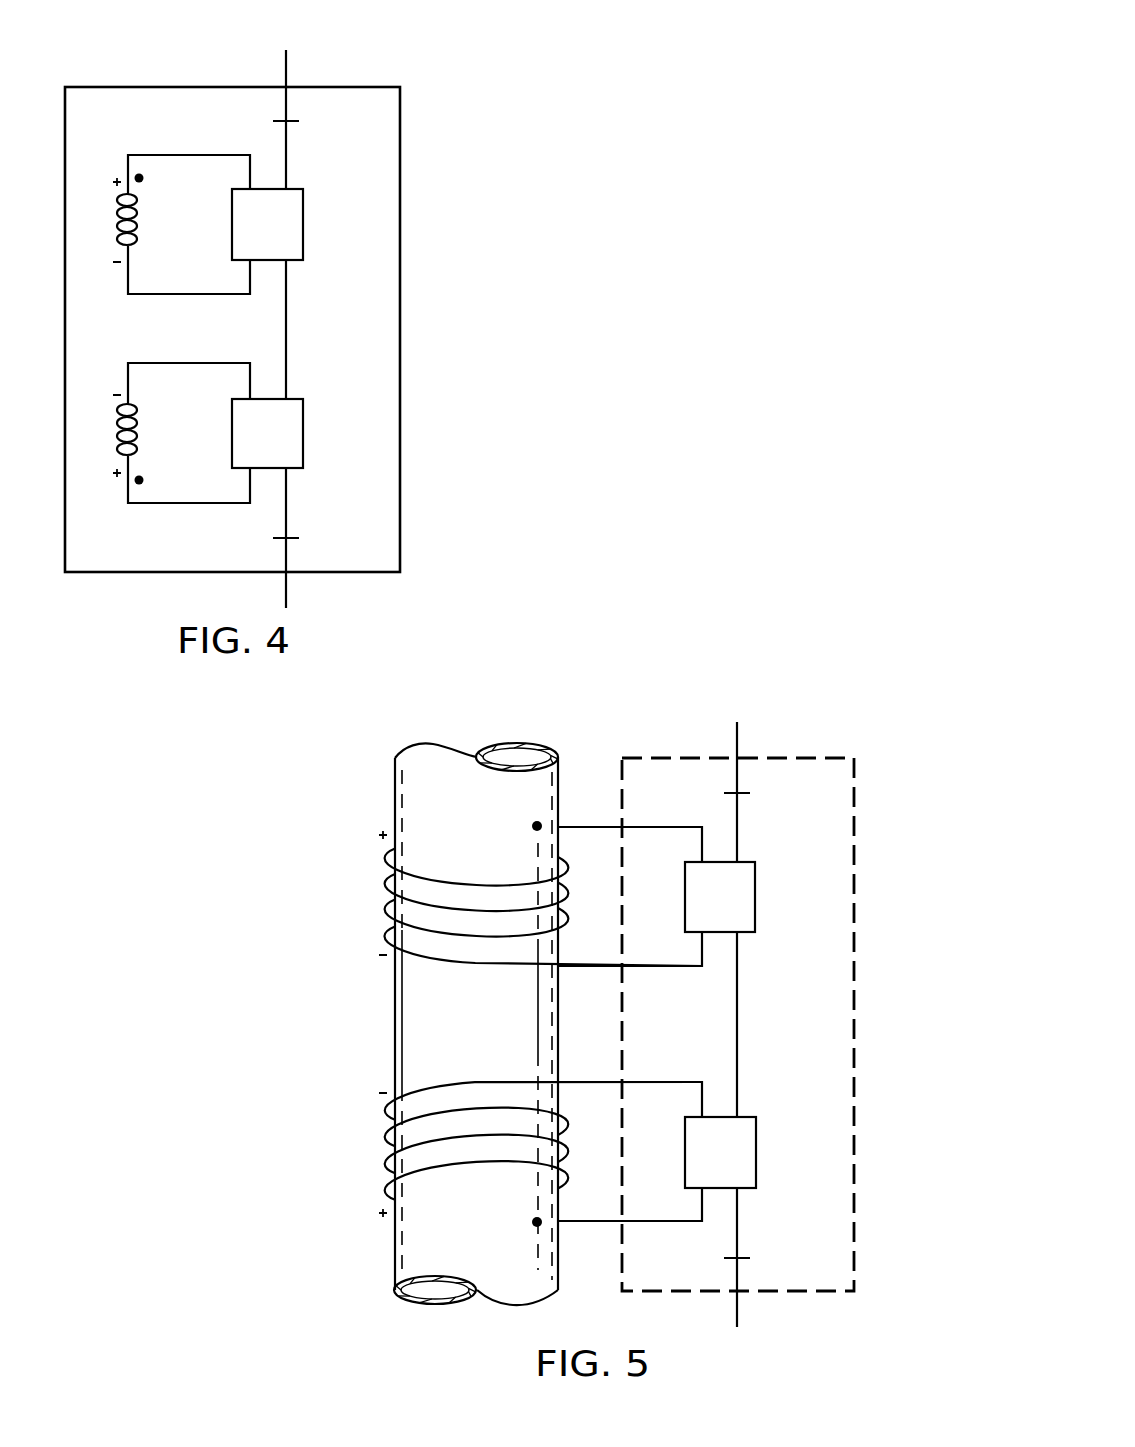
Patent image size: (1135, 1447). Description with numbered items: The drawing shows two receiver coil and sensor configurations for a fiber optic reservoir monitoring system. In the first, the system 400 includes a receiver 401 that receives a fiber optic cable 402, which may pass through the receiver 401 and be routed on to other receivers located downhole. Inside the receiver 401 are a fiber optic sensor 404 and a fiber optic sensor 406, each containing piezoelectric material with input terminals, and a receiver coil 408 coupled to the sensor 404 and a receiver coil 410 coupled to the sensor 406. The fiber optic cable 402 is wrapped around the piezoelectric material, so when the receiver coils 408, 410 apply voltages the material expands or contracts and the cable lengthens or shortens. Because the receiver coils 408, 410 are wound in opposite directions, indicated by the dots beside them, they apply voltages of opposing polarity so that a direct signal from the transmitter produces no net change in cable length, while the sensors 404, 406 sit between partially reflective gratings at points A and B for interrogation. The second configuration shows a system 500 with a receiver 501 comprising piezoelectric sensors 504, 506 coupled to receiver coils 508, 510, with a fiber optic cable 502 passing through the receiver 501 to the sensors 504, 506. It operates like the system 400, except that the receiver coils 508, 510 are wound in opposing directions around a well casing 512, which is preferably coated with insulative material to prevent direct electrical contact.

In FIG. 4, the system 400 is at (149, 61).
In FIG. 4, the receiver 401 is at (407, 326).
In FIG. 4, the fiber optic cable 402 is at (286, 65).
In FIG. 4, the fiber optic sensor 404 is at (303, 223).
In FIG. 4, the fiber optic sensor 406 is at (303, 433).
In FIG. 4, the receiver coil 408 is at (135, 240).
In FIG. 4, the receiver coil 410 is at (135, 452).
In FIG. 5, the system 500 is at (727, 642).
In FIG. 5, the receiver 501 is at (861, 980).
In FIG. 5, the fiber optic cable 502 is at (737, 738).
In FIG. 5, the piezoelectric sensor 504 is at (755, 895).
In FIG. 5, the piezoelectric sensor 506 is at (756, 1157).
In FIG. 5, the receiver coil 508 is at (385, 855).
In FIG. 5, the receiver coil 510 is at (385, 1195).
In FIG. 5, the well casing 512 is at (396, 1024).